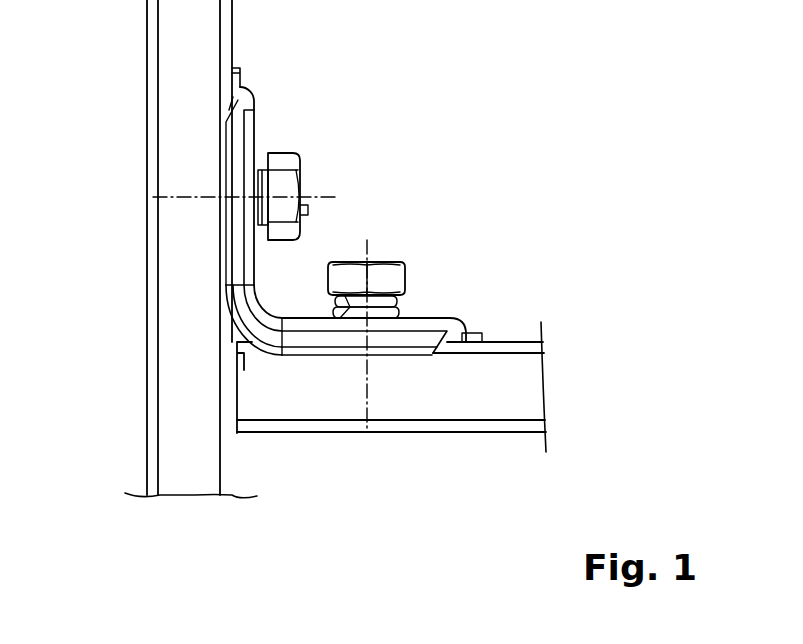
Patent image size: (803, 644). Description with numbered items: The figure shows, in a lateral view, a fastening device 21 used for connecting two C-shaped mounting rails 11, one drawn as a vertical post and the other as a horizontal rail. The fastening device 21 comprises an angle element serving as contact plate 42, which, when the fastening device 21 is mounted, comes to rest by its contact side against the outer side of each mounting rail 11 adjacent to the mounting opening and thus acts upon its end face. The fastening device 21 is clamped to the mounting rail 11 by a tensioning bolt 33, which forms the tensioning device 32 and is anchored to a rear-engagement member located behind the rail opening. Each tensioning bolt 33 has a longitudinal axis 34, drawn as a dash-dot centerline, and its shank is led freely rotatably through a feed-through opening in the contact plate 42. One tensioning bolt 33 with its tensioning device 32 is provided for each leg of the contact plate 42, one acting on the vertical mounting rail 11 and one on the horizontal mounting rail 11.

The mounting rail 11 is at (180, 70).
The fastening device 21 is at (527, 122).
The tensioning device 32 is at (316, 182).
The tensioning bolt 33 is at (305, 213).
The longitudinal axis 34 is at (192, 203).
The contact plate 42 is at (258, 128).